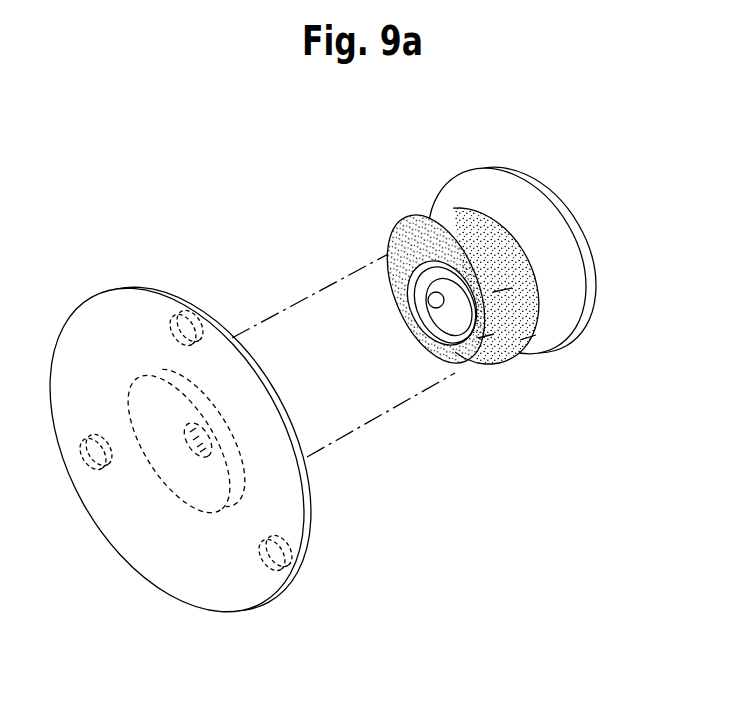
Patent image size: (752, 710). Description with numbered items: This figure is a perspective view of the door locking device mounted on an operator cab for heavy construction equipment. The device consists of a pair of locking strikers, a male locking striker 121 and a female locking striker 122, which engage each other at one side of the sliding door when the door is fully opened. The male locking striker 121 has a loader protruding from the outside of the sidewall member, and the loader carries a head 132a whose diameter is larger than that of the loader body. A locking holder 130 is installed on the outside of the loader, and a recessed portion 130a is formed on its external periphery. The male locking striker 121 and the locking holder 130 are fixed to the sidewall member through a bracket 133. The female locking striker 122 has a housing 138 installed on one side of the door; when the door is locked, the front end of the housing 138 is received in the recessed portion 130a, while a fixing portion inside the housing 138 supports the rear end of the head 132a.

The male locking striker 121 is at (500, 300).
The female locking striker 122 is at (127, 248).
The locking holder 130 is at (432, 213).
The recessed portion 130a is at (467, 355).
The head 132a is at (454, 379).
The bracket 133 is at (517, 197).
The housing 138 is at (212, 498).